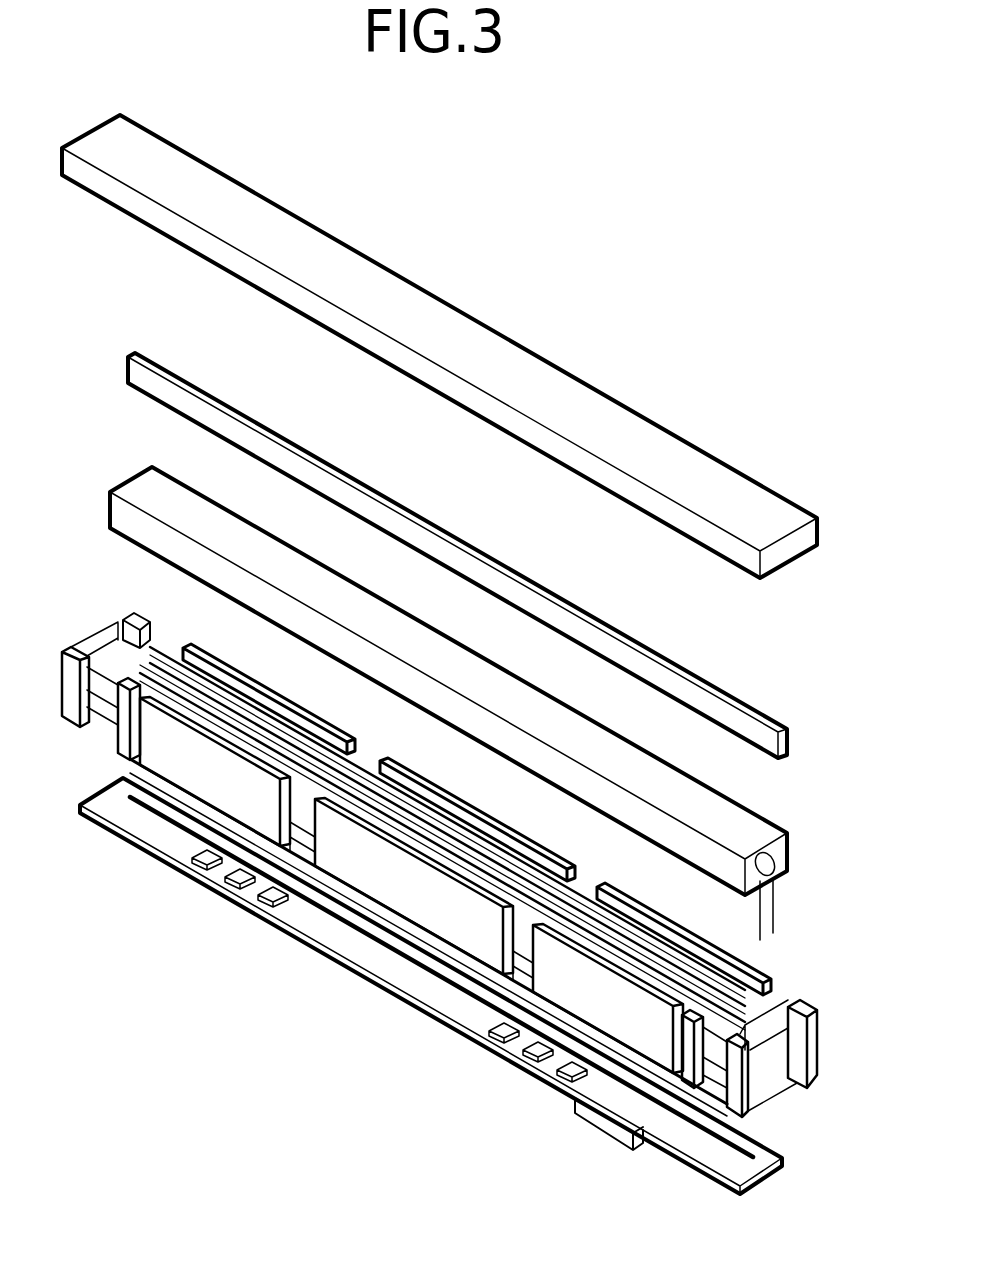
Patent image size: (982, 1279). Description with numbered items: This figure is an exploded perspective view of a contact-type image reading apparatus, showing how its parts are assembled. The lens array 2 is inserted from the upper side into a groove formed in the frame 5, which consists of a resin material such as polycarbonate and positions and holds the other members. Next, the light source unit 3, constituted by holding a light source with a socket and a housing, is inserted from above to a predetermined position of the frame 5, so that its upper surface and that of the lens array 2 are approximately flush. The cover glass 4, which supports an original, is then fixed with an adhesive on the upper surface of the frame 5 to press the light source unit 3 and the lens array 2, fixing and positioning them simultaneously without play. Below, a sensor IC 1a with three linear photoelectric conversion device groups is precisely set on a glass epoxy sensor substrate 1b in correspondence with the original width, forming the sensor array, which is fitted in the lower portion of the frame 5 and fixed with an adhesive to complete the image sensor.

The sensor IC 1a is at (753, 1142).
The sensor substrate 1b is at (355, 947).
The lens array 2 is at (787, 743).
The light source unit 3 is at (785, 857).
The cover glass 4 is at (788, 552).
The frame 5 is at (810, 1042).